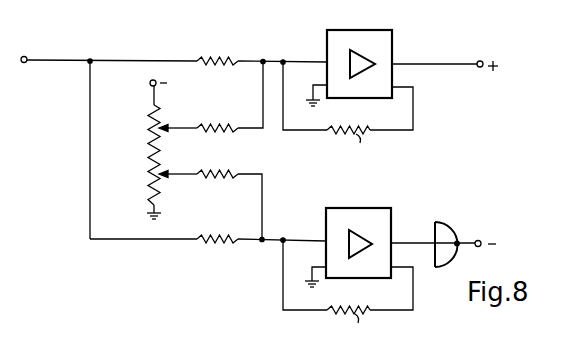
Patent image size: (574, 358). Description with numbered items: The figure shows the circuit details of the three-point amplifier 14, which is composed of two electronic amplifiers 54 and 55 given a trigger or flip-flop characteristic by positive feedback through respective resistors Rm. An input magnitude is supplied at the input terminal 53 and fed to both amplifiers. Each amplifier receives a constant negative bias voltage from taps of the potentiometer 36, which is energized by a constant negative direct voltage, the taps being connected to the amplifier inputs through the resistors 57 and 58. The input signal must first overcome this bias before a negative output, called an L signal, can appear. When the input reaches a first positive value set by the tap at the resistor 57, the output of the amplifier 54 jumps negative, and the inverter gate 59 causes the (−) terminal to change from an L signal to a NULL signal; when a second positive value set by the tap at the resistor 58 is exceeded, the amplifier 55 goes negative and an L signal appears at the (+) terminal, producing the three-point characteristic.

The three-point amplifier 14 is at (203, 300).
The input terminal 53 is at (21, 57).
The potentiometer 36 is at (142, 149).
The resistor 58 is at (215, 125).
The resistor 57 is at (231, 177).
The electronic amplifier 55 is at (361, 30).
The electronic amplifier 54 is at (355, 210).
The inverter gate 59 is at (441, 228).